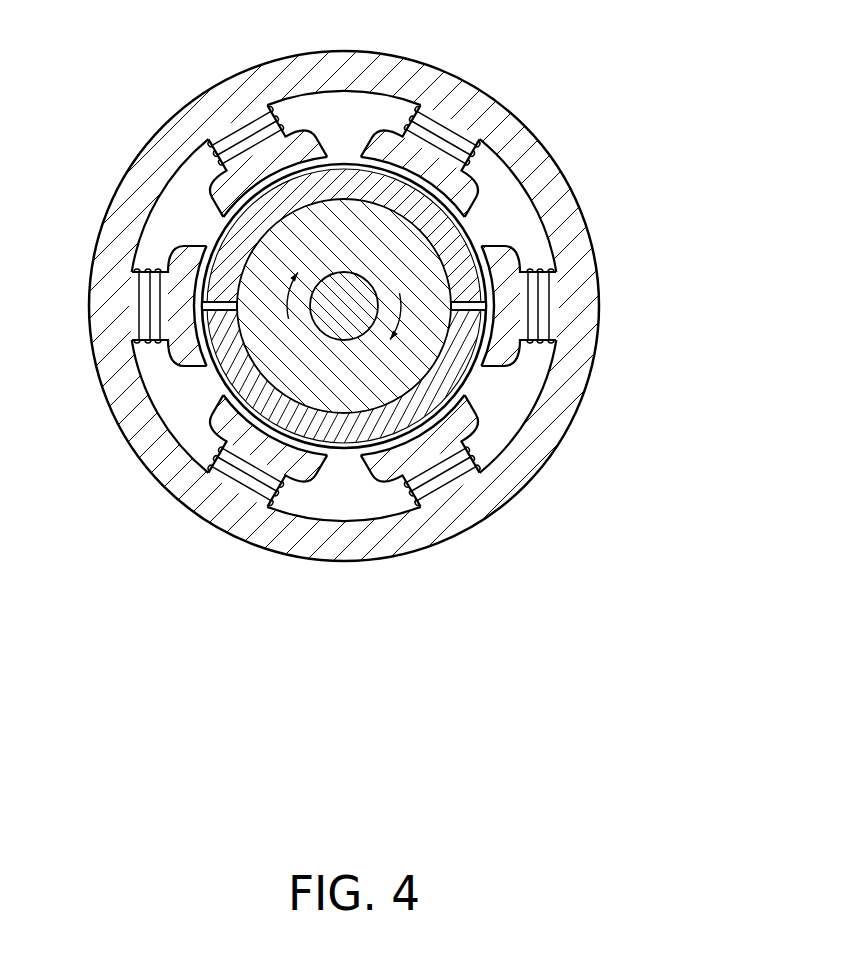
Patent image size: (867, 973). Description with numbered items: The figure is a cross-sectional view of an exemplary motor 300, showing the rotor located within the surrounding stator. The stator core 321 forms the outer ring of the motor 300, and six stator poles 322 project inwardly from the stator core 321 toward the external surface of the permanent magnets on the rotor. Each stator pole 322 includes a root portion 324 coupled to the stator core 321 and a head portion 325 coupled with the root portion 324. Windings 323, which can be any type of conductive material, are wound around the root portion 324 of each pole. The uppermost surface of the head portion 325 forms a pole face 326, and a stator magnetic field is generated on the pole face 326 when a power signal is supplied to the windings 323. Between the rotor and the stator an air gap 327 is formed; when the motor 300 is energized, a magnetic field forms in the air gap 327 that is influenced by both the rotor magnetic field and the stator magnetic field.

The motor 300 is at (577, 43).
The stator core 321 is at (533, 148).
The stator pole 322 is at (517, 340).
The windings 323 is at (543, 305).
The root portion 324 is at (238, 490).
The head portion 325 is at (227, 423).
The pole face 326 is at (227, 398).
The air gap 327 is at (376, 451).